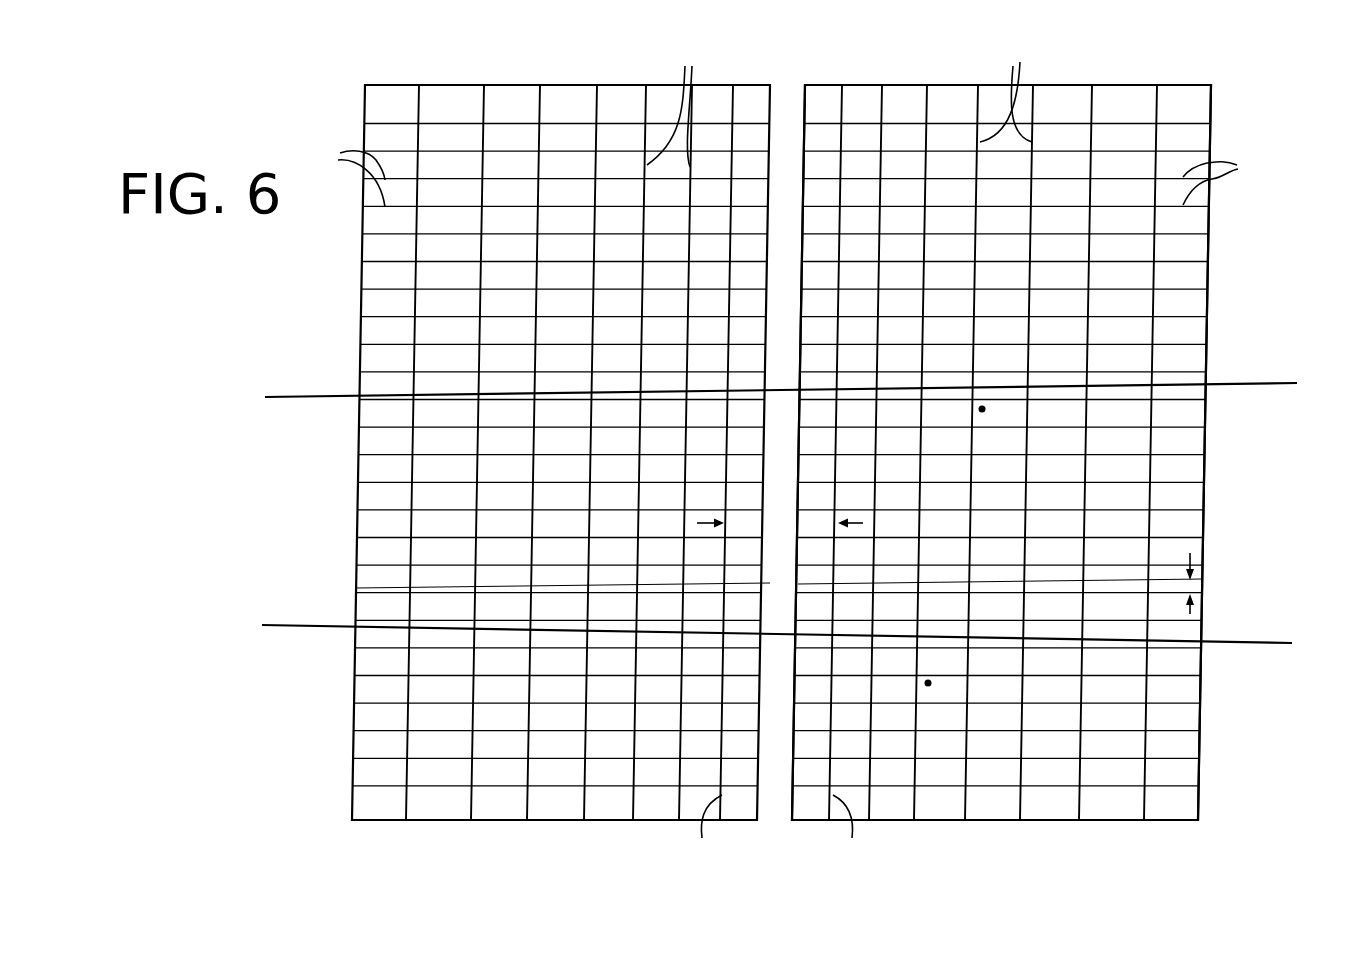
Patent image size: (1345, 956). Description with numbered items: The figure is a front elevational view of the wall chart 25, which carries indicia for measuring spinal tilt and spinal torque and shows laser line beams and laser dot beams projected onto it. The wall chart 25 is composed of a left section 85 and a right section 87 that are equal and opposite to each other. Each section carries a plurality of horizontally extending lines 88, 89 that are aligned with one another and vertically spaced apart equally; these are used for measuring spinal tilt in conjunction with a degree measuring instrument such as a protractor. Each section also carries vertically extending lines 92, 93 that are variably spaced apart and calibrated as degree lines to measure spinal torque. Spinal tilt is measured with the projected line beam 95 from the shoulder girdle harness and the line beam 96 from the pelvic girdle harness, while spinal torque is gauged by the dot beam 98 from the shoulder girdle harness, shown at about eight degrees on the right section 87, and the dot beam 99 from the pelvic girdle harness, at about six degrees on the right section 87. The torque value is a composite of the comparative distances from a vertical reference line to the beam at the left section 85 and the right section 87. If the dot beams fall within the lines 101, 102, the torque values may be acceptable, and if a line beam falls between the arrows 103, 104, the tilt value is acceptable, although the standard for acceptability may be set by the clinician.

The wall chart 25 is at (1224, 82).
The left section 85 is at (596, 82).
The right section 87 is at (951, 83).
The horizontally extending lines 88 is at (344, 175).
The horizontally extending lines 89 is at (1225, 175).
The vertically extending lines 92 is at (674, 103).
The vertically extending lines 93 is at (1014, 89).
The line beam 95 is at (1258, 383).
The line beam 96 is at (1256, 643).
The dot beam 98 is at (985, 409).
The dot beam 99 is at (931, 683).
The line 101 is at (702, 831).
The line 102 is at (863, 831).
The arrow 103 is at (1192, 568).
The arrow 104 is at (1198, 594).